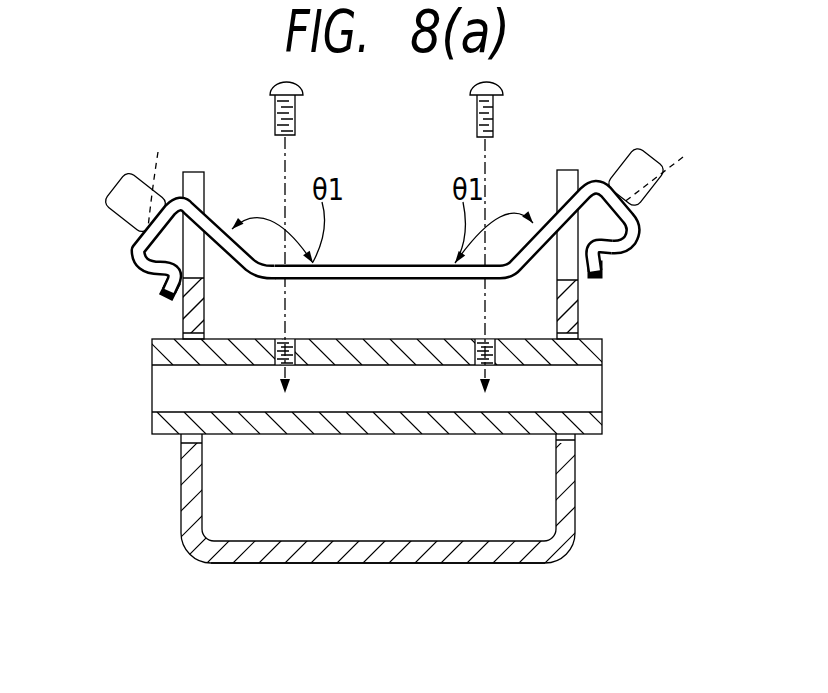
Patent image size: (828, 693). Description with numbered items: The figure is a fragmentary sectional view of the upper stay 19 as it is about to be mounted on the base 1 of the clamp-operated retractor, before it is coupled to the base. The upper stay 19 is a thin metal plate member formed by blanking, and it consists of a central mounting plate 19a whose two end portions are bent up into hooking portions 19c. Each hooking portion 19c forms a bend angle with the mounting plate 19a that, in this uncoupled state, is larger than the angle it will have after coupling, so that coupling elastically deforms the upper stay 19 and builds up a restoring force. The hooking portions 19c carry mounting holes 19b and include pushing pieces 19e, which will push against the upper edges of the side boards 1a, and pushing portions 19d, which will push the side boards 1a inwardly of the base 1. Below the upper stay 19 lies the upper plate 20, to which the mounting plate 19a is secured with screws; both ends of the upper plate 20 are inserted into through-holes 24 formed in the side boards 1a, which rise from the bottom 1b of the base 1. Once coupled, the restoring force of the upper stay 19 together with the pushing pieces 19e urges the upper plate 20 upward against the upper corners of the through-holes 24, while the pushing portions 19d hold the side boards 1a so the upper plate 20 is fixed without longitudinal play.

The base 1 is at (372, 531).
The side boards 1a is at (181, 523).
The bottom wall of channel member 1b is at (468, 564).
The upper plate 20 is at (300, 452).
The through-holes 24 is at (180, 437).
The upper stay 19 is at (383, 205).
The mounting plate 19a is at (396, 270).
The mounting holes 19b is at (420, 172).
The hooking portions 19c is at (213, 218).
The pushing portions 19d is at (163, 288).
The pushing pieces 19e is at (123, 185).